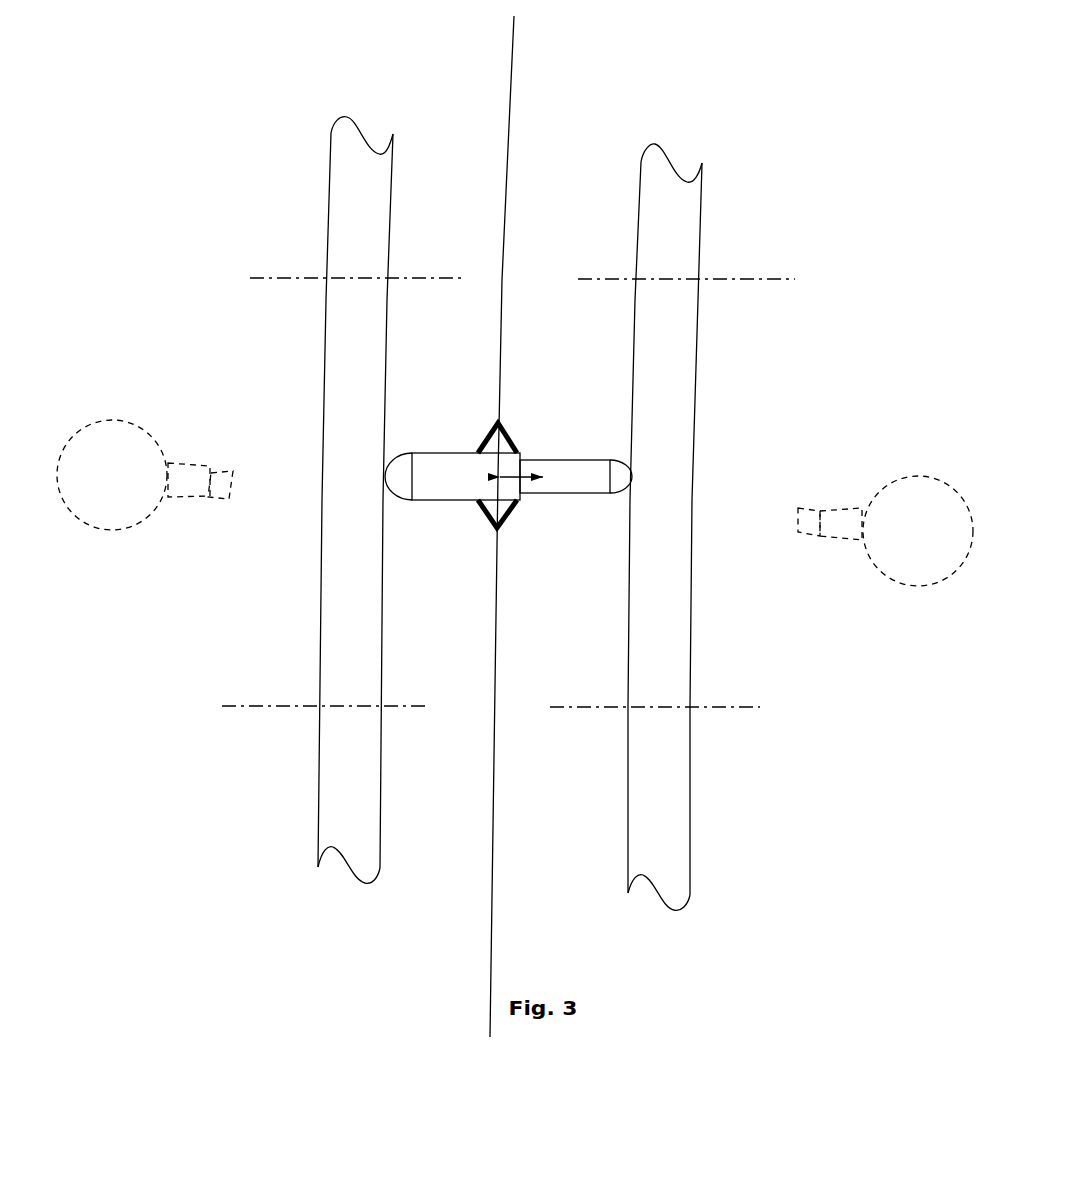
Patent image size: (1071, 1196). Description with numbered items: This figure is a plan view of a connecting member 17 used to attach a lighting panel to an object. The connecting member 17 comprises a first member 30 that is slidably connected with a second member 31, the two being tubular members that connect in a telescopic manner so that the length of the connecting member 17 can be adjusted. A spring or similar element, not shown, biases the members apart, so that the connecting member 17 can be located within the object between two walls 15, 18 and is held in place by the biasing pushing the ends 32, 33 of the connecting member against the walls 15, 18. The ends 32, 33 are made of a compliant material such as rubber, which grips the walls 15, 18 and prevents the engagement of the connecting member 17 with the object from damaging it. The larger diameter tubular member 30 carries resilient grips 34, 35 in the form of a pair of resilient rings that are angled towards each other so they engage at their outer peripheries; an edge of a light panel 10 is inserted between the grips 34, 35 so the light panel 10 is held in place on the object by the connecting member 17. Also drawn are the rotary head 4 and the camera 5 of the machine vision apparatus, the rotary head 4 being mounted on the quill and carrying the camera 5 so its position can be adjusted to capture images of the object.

The light panel 10 is at (509, 95).
The wall 15 is at (332, 389).
The wall 18 is at (703, 224).
The rotary head 4 is at (122, 418).
The camera 5 is at (172, 493).
The first member 30 is at (433, 452).
The second member 31 is at (584, 457).
The end 32 is at (402, 477).
The end 33 is at (625, 473).
The resilient grip 34 is at (499, 426).
The resilient grip 35 is at (510, 512).
The connecting member 17 is at (579, 509).